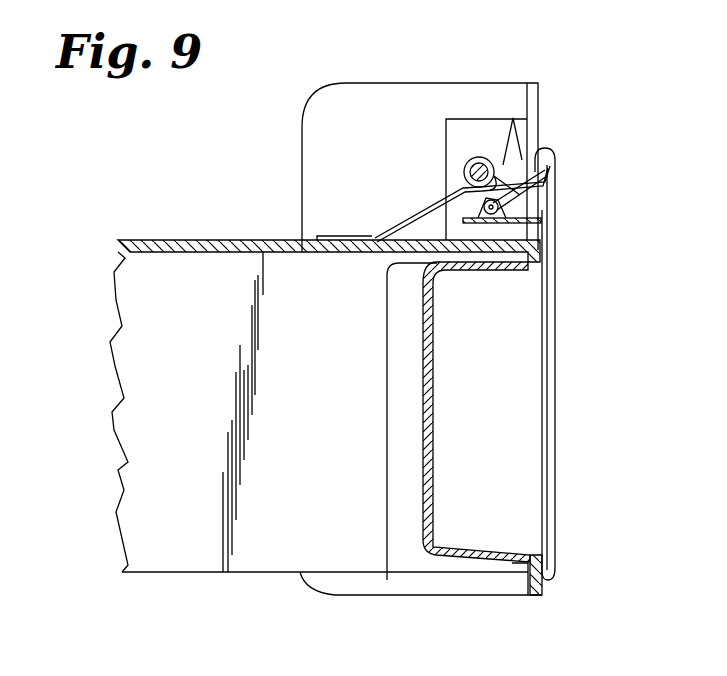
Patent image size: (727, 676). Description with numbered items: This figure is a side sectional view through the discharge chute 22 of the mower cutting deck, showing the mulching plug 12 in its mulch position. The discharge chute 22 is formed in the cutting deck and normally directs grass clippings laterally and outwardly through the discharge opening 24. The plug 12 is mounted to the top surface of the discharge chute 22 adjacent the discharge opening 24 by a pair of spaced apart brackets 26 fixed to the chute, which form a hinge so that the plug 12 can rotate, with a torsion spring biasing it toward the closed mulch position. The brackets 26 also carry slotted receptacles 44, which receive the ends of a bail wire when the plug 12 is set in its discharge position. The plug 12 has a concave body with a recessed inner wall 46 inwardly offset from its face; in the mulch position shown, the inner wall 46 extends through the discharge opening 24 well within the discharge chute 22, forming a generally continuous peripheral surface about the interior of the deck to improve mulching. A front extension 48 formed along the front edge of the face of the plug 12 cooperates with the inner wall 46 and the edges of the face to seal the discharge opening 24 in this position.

The plug 12 is at (532, 291).
The discharge chute 22 is at (294, 575).
The discharge opening 24 is at (513, 568).
The brackets 26 is at (508, 122).
The receptacles 44 is at (535, 146).
The inner wall 46 is at (397, 401).
The front extension 48 is at (380, 95).